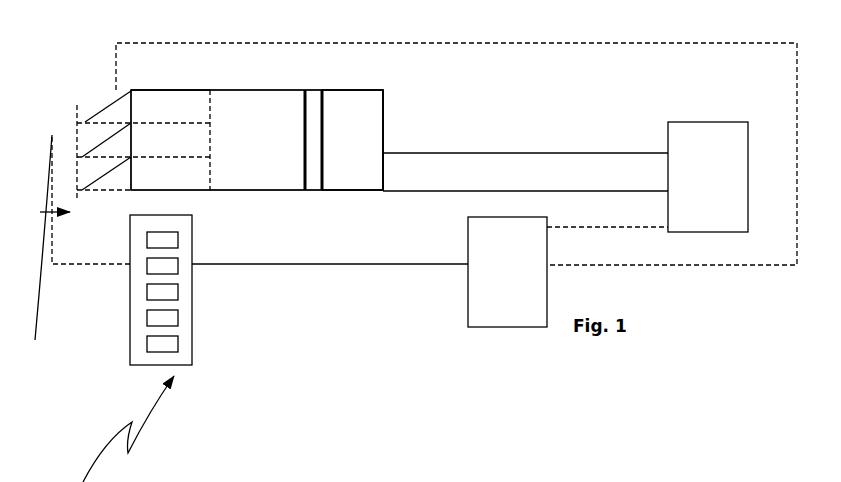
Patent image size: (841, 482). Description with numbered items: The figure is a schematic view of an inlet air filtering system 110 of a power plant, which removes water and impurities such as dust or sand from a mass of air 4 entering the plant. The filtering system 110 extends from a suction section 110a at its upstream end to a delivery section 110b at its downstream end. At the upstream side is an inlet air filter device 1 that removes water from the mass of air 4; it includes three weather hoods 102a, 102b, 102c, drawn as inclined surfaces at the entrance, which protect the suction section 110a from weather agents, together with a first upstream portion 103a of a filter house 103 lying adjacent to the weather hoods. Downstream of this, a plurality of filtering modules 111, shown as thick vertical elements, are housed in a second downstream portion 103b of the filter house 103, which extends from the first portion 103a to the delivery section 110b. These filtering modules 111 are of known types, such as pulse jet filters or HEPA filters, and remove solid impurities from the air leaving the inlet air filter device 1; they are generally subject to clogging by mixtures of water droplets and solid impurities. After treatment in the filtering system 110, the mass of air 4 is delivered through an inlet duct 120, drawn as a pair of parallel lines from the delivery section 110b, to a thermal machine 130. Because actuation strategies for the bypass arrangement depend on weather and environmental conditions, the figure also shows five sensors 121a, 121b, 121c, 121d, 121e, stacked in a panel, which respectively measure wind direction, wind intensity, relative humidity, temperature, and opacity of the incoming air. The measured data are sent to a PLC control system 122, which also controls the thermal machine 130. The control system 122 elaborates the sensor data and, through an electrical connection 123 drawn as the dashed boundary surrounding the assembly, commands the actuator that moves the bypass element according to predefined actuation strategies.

The upstream inlet air filter device 1 is at (145, 88).
The mass of air 4 is at (36, 250).
The weather hood 102a is at (108, 107).
The weather hood 102b is at (110, 137).
The weather hood 102c is at (115, 168).
The filter house 103 is at (352, 187).
The first upstream portion of filter house 103a is at (177, 90).
The second downstream portion of filter house 103b is at (357, 90).
The inlet air filtering system 110 is at (385, 137).
The suction section 110a is at (78, 127).
The delivery section 110b is at (385, 170).
The downstream filtering modules 111 is at (312, 88).
The inlet duct 120 is at (546, 180).
The sensor 121a is at (178, 248).
The sensor 121b is at (178, 265).
The sensor 121c is at (178, 292).
The sensor 121d is at (178, 318).
The sensor 121e is at (178, 345).
The PLC control system 122 is at (467, 327).
The electrical connection 123 is at (635, 43).
The thermal machine 130 is at (720, 178).